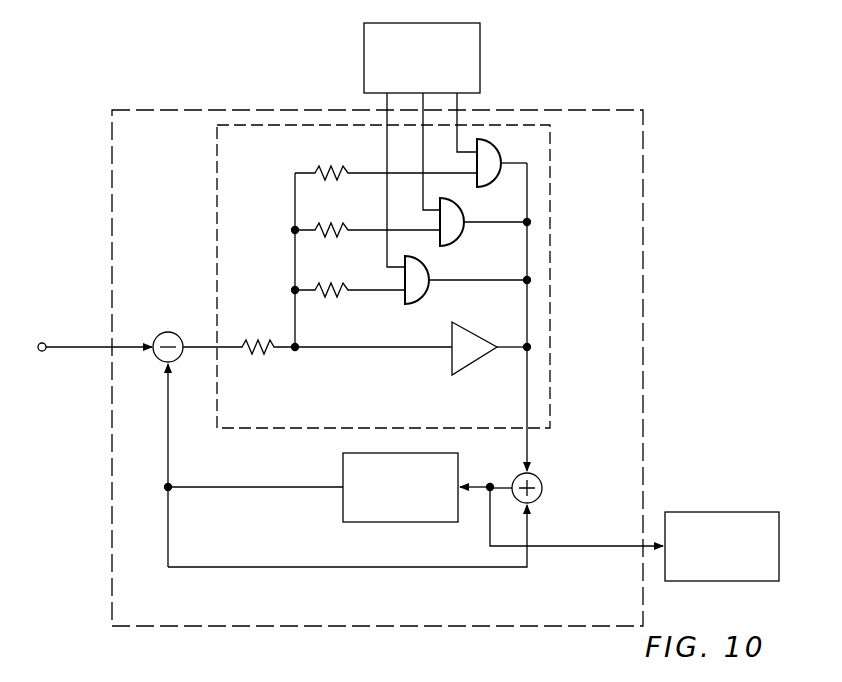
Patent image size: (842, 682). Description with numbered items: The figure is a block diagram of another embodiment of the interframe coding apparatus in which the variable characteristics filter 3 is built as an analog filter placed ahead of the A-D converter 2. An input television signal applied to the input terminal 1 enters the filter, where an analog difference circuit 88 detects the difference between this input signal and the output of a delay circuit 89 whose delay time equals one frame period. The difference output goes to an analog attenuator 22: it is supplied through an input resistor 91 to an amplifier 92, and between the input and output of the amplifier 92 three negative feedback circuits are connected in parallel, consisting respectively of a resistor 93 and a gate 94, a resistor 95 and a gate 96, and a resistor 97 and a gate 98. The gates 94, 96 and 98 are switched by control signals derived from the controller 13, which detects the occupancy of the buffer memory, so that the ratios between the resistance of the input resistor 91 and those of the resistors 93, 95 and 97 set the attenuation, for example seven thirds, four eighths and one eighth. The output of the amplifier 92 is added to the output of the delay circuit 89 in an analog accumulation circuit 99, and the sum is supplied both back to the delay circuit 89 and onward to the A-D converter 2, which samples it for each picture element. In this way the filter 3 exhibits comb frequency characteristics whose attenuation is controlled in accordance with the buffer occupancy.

The input terminal 1 is at (44, 341).
The A-D converter 2 is at (735, 512).
The variable characteristics filter 3 is at (172, 109).
The controller 13 is at (481, 71).
The analog attenuator 22 is at (551, 288).
The analog difference circuit 88 is at (176, 334).
The delay circuit 89 is at (410, 522).
The input resistor 91 is at (258, 339).
The amplifier 92 is at (496, 388).
The resistor 93 is at (332, 165).
The gate 94 is at (498, 150).
The resistor 95 is at (332, 222).
The gate 96 is at (461, 209).
The resistor 97 is at (332, 282).
The gate 98 is at (426, 267).
The analog accumulation circuit 99 is at (560, 512).